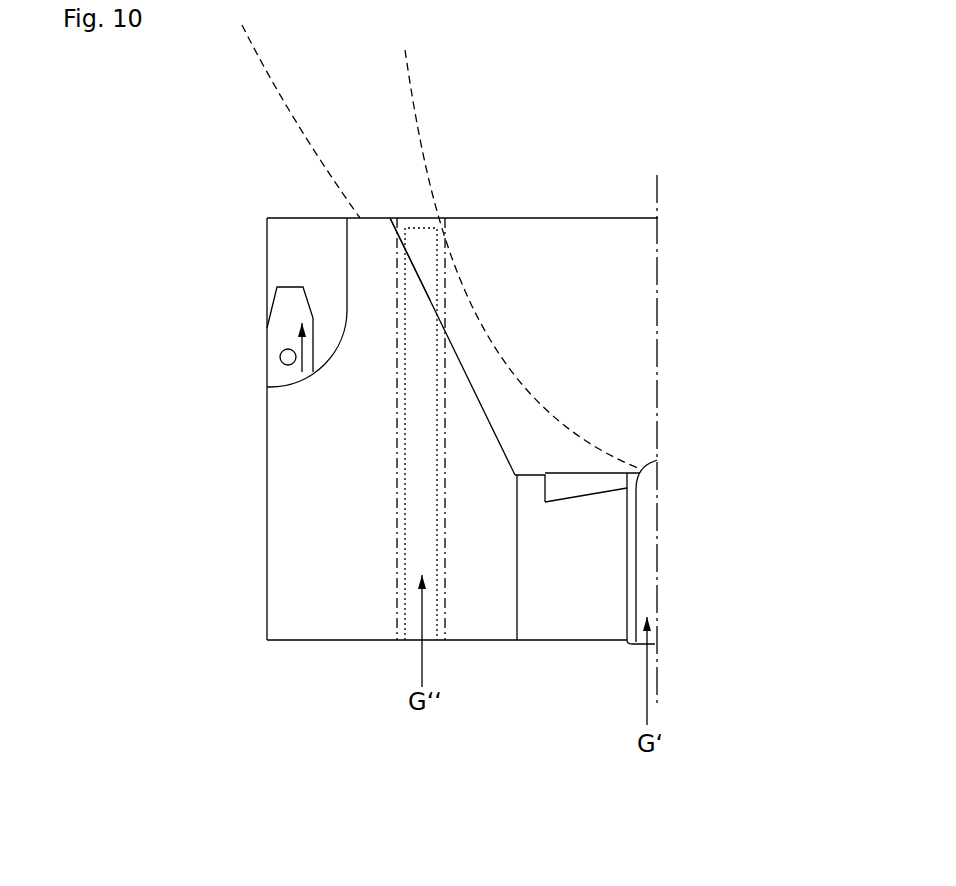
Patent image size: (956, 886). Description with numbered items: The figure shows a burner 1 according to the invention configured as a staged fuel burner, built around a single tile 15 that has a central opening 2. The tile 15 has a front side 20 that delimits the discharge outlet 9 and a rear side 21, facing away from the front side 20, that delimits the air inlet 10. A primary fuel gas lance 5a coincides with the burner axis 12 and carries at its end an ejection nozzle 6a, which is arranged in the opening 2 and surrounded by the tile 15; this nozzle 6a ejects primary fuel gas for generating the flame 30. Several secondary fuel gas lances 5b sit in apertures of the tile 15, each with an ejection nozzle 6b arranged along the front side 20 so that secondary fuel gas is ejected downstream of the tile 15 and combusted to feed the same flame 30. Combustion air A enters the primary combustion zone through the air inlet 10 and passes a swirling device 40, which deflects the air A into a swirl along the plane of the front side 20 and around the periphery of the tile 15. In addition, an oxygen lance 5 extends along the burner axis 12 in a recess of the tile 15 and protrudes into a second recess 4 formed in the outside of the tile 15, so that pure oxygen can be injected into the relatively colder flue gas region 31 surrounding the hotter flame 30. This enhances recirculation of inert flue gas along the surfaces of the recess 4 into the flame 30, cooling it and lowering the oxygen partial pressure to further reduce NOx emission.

The burner 1 is at (218, 135).
The opening 2 is at (577, 285).
The second recess 4 is at (296, 244).
The oxygen lance 5 is at (283, 335).
The primary fuel gas lance 5a is at (660, 458).
The secondary fuel gas lance 5b is at (425, 247).
The ejection nozzle 6a is at (653, 447).
The ejection nozzle 6b is at (420, 218).
The discharge outlet 9 is at (593, 233).
The air inlet 10 is at (540, 630).
The burner axis 12 is at (658, 268).
The tile 15 is at (320, 500).
The front side 20 is at (377, 218).
The rear side 21 is at (333, 650).
The flame 30 is at (410, 107).
The flue gas region 31 is at (275, 82).
The swirling device 40 is at (585, 477).
The air A is at (570, 592).